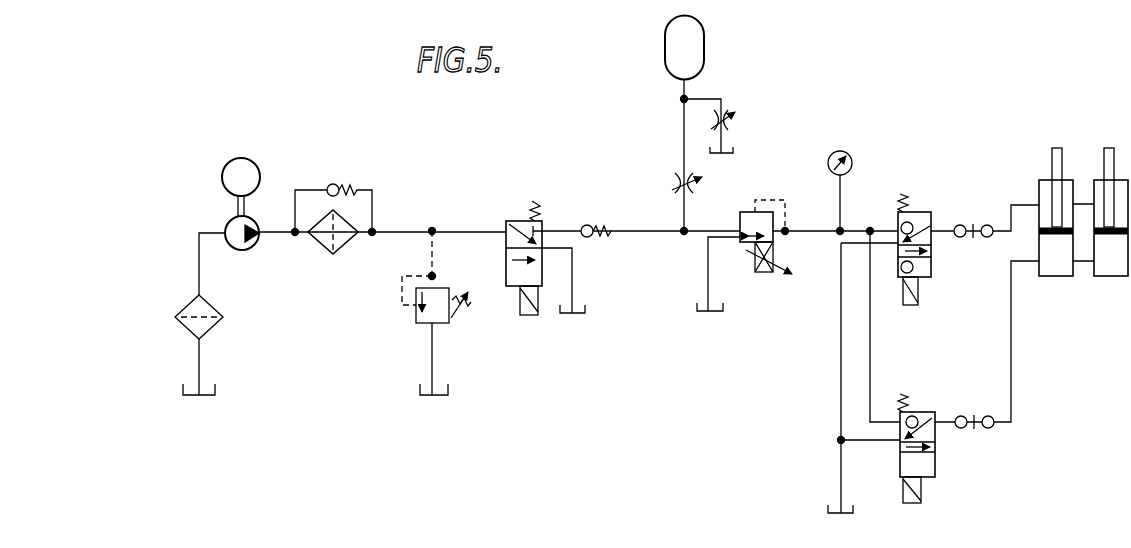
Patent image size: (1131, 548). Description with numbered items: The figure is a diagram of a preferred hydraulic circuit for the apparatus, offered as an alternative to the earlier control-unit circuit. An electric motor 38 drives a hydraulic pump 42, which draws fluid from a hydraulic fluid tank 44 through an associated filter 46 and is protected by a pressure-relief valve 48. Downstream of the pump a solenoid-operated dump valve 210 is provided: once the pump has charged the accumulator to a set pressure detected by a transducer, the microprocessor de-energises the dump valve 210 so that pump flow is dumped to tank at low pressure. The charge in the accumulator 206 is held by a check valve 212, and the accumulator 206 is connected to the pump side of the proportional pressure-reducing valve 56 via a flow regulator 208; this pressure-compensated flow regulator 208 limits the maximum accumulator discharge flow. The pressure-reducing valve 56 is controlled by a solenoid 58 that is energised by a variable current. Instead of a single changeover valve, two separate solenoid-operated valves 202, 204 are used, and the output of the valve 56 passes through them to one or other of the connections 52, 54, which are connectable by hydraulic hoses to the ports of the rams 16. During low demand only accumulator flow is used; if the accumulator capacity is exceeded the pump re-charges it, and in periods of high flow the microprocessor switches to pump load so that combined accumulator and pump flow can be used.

The rams 16 is at (1073, 180).
The electric motor 38 is at (222, 181).
The hydraulic pump 42 is at (232, 221).
The hydraulic fluid tank 44 is at (216, 391).
The filter 46 is at (325, 251).
The pressure-relief valve 48 is at (420, 324).
The connection 52 is at (972, 243).
The connection 54 is at (977, 435).
The proportional pressure-reducing valve 56 is at (740, 211).
The solenoid 58 is at (774, 262).
The solenoid-operated valve 202 is at (917, 212).
The solenoid-operated valve 204 is at (918, 412).
The accumulator 206 is at (692, 35).
The flow regulator 208 is at (677, 185).
The solenoid-operated dump valve 210 is at (506, 221).
The check valve 212 is at (590, 224).